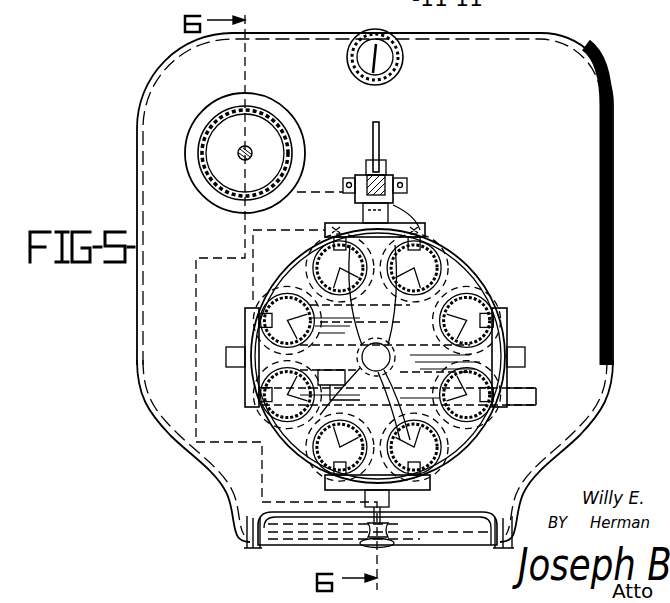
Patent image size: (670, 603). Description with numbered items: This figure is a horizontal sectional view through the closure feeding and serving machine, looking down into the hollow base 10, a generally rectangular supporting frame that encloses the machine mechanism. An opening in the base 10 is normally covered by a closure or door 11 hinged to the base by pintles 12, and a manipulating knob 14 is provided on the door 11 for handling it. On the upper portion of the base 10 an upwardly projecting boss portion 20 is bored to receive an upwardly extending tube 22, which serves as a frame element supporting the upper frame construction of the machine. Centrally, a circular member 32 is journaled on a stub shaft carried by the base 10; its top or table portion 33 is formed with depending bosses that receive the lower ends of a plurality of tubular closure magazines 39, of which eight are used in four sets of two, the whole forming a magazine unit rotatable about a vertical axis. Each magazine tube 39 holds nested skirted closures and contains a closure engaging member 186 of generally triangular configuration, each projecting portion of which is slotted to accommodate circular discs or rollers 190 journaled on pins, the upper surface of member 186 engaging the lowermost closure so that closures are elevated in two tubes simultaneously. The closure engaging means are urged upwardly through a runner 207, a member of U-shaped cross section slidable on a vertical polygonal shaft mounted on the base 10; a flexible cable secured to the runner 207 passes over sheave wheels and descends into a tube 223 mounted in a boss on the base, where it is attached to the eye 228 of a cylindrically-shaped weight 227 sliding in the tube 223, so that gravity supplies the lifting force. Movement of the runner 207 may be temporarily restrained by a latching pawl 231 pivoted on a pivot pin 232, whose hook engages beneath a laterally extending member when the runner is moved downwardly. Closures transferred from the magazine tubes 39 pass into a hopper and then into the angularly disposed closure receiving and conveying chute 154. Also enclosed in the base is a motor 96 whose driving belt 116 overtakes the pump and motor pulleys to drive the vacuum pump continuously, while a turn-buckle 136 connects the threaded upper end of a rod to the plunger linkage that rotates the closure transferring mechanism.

The hollow base 10 is at (596, 84).
The closure or door 11 is at (452, 537).
The pintles 12 is at (244, 541).
The manipulating knob 14 is at (380, 543).
The boss portion 20 is at (288, 117).
The tube 22 is at (240, 160).
The turn-buckle 136 is at (205, 197).
The tube 223 is at (400, 55).
The cylindrically-shaped weight 227 is at (402, 72).
The eye 228 is at (390, 78).
The latching pawl 231 is at (381, 128).
The pivot pin 232 is at (387, 165).
The runner 207 is at (407, 181).
The closure receiving and conveying chute 154 is at (362, 176).
The motor 96 is at (252, 262).
The circular member 32 is at (505, 275).
The rollers 190 is at (427, 268).
The closure engaging member 186 is at (470, 262).
The table portion 33 is at (470, 435).
The magazine tubes 39 is at (482, 305).
The driving belt 116 is at (536, 396).